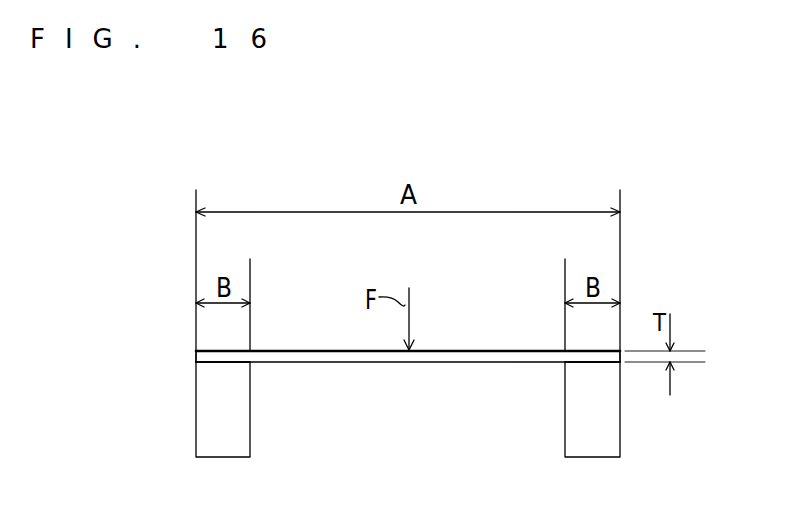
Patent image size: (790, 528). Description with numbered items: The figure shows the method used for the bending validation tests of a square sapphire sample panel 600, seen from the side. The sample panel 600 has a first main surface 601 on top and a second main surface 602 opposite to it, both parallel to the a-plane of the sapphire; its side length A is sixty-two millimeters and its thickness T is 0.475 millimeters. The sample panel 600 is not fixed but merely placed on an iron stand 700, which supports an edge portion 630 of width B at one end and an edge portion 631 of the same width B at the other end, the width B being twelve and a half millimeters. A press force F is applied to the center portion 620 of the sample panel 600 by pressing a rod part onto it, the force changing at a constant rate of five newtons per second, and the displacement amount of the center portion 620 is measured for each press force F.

The sample panel 600 is at (408, 358).
The first main surface 601 is at (309, 350).
The second main surface 602 is at (310, 364).
The center portion 620 is at (417, 348).
The edge portion 630 is at (652, 396).
The edge portion 631 is at (160, 396).
The stand 700 is at (224, 446).